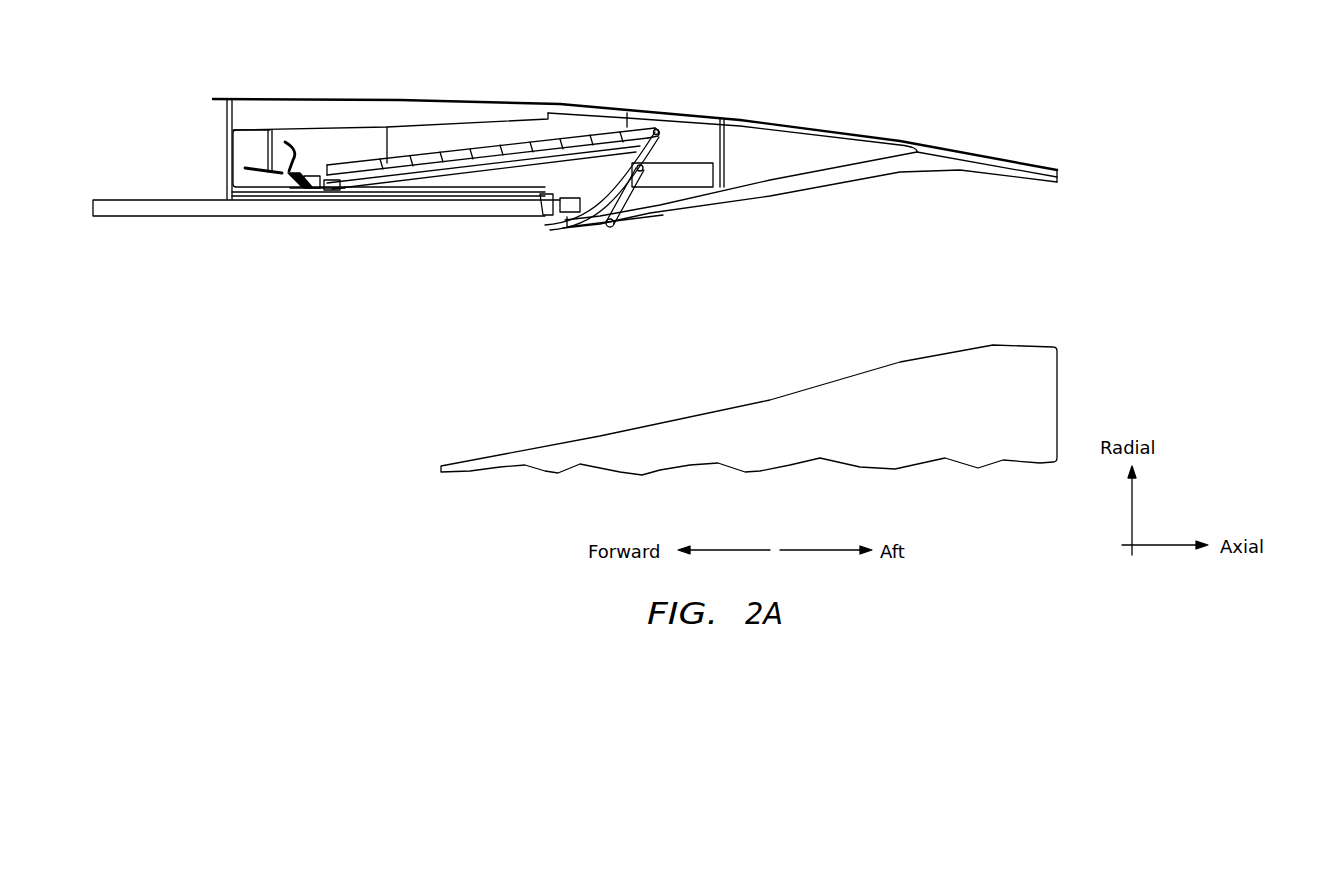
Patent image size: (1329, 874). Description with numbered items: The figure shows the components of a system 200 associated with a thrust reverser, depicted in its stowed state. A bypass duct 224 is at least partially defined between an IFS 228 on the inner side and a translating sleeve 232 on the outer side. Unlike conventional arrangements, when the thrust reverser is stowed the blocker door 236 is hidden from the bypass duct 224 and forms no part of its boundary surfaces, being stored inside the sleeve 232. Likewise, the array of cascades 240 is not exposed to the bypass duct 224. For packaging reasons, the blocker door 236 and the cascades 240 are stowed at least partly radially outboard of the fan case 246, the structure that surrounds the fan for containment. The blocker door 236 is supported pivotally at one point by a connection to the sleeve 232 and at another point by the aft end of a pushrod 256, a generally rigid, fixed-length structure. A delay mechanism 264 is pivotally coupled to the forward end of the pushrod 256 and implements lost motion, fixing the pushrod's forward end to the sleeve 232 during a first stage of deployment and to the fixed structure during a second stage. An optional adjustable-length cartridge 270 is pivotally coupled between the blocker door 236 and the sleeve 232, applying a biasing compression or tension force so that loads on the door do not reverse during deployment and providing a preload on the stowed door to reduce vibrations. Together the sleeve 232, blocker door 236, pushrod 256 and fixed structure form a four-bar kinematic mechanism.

The system 200 is at (1113, 108).
The bypass duct 224 is at (810, 288).
The IFS 228 is at (993, 342).
The translating sleeve 232 is at (830, 125).
The blocker door 236 is at (541, 215).
The cascades 240 is at (455, 140).
The fan case 246 is at (254, 217).
The pushrod 256 is at (414, 176).
The delay mechanism 264 is at (302, 190).
The cartridge 270 is at (673, 172).